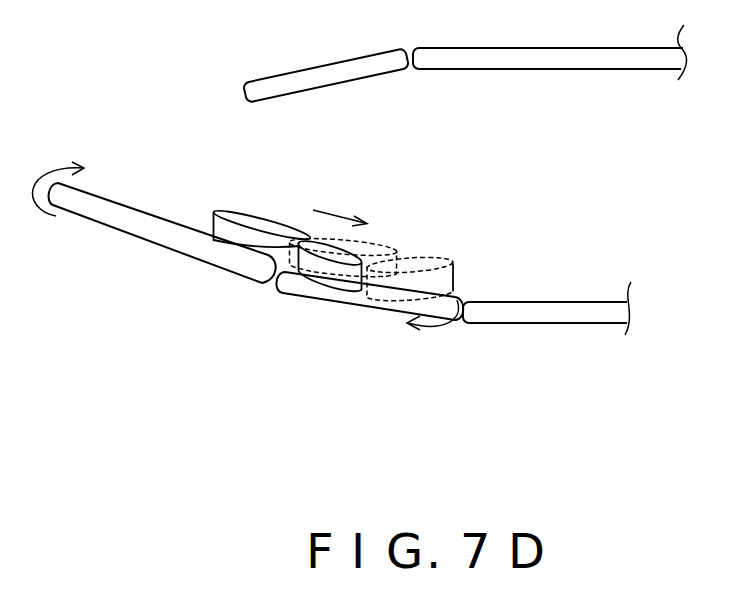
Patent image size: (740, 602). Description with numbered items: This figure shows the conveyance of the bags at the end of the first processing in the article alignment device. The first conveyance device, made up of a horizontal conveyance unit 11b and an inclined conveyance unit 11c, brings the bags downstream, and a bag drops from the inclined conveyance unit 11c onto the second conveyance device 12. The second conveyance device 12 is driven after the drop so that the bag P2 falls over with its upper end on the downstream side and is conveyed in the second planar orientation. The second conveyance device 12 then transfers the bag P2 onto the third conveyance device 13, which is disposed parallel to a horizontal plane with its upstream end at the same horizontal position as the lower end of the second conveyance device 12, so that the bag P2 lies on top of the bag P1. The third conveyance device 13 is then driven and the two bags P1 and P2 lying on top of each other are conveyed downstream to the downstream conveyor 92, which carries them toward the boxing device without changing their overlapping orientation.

The horizontal conveyance unit 11b is at (640, 71).
The inclined conveyance unit 11c is at (368, 77).
The second conveyance device 12 is at (175, 247).
The third conveyance device 13 is at (348, 300).
The downstream conveyor 92 is at (577, 321).
The bag P1 is at (298, 243).
The bag P2 is at (245, 208).